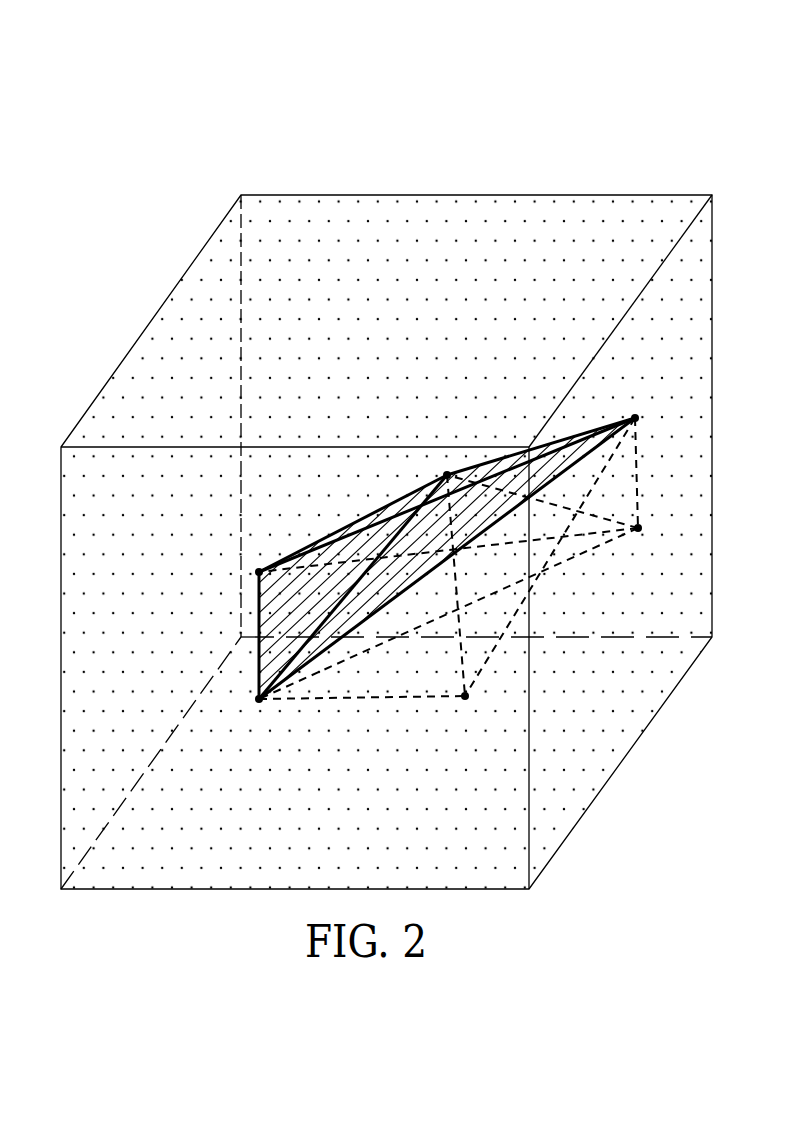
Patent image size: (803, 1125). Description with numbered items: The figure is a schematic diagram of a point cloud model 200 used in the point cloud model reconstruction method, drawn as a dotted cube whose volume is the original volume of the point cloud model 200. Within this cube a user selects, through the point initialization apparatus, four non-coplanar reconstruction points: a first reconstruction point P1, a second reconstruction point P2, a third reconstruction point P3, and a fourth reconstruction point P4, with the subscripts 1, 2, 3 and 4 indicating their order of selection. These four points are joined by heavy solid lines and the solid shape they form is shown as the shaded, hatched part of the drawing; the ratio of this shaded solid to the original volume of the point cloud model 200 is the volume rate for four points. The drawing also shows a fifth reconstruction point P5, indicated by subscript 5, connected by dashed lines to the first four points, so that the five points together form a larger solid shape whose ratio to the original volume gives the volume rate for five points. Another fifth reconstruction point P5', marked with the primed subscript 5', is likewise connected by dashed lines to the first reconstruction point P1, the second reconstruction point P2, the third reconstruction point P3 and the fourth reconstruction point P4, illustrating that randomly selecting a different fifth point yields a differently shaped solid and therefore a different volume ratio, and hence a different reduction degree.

The point cloud model 200 is at (139, 126).
The first reconstruction point P1 is at (259, 555).
The second reconstruction point P2 is at (253, 716).
The third reconstruction point P3 is at (430, 465).
The fourth reconstruction point P4 is at (640, 401).
The fifth reconstruction point P5 is at (471, 714).
The another fifth reconstruction point P5' is at (656, 533).
The first reconstruction point 1 is at (259, 555).
The second reconstruction point 2 is at (253, 716).
The third reconstruction point 3 is at (430, 465).
The fourth reconstruction point 4 is at (640, 401).
The fifth reconstruction point 5 is at (471, 714).
The another fifth reconstruction point 5' is at (656, 533).